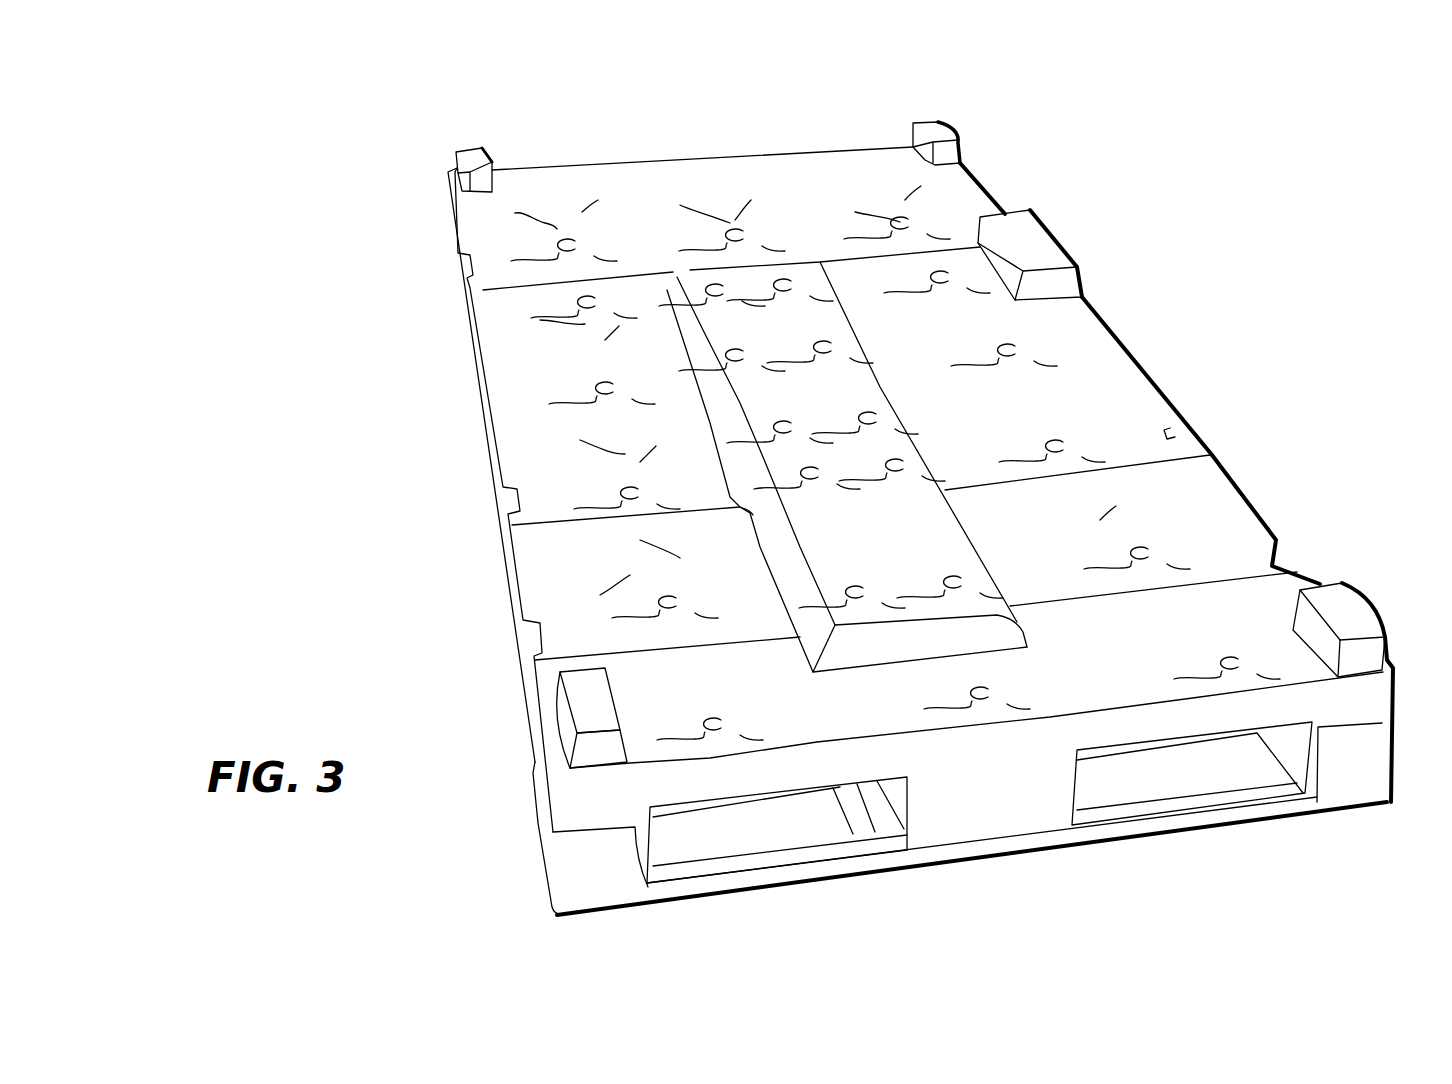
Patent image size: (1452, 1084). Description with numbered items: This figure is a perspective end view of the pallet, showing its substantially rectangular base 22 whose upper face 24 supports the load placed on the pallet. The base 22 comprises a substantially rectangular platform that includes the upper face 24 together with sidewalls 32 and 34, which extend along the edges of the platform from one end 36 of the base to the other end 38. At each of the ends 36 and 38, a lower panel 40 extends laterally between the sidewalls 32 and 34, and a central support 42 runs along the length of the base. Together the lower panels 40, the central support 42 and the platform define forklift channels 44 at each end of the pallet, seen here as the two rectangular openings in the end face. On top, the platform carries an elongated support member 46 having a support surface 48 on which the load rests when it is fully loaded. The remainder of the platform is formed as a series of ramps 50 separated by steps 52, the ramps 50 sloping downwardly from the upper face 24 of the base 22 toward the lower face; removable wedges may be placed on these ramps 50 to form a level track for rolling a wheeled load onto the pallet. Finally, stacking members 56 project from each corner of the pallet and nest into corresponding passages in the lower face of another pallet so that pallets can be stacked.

The base 22 is at (1097, 319).
The upper face 24 is at (490, 330).
The sidewall 32 is at (487, 400).
The sidewall 34 is at (1120, 347).
The end 36 is at (665, 162).
The end 38 is at (1017, 730).
The lower panel 40 is at (762, 865).
The central support 42 is at (1077, 787).
The forklift channel 44 is at (1222, 815).
The elongated support member 46 is at (903, 432).
The support surface 48 is at (853, 473).
The ramp 50 is at (983, 207).
The step 52 is at (897, 252).
The stacking member 56 is at (1350, 608).